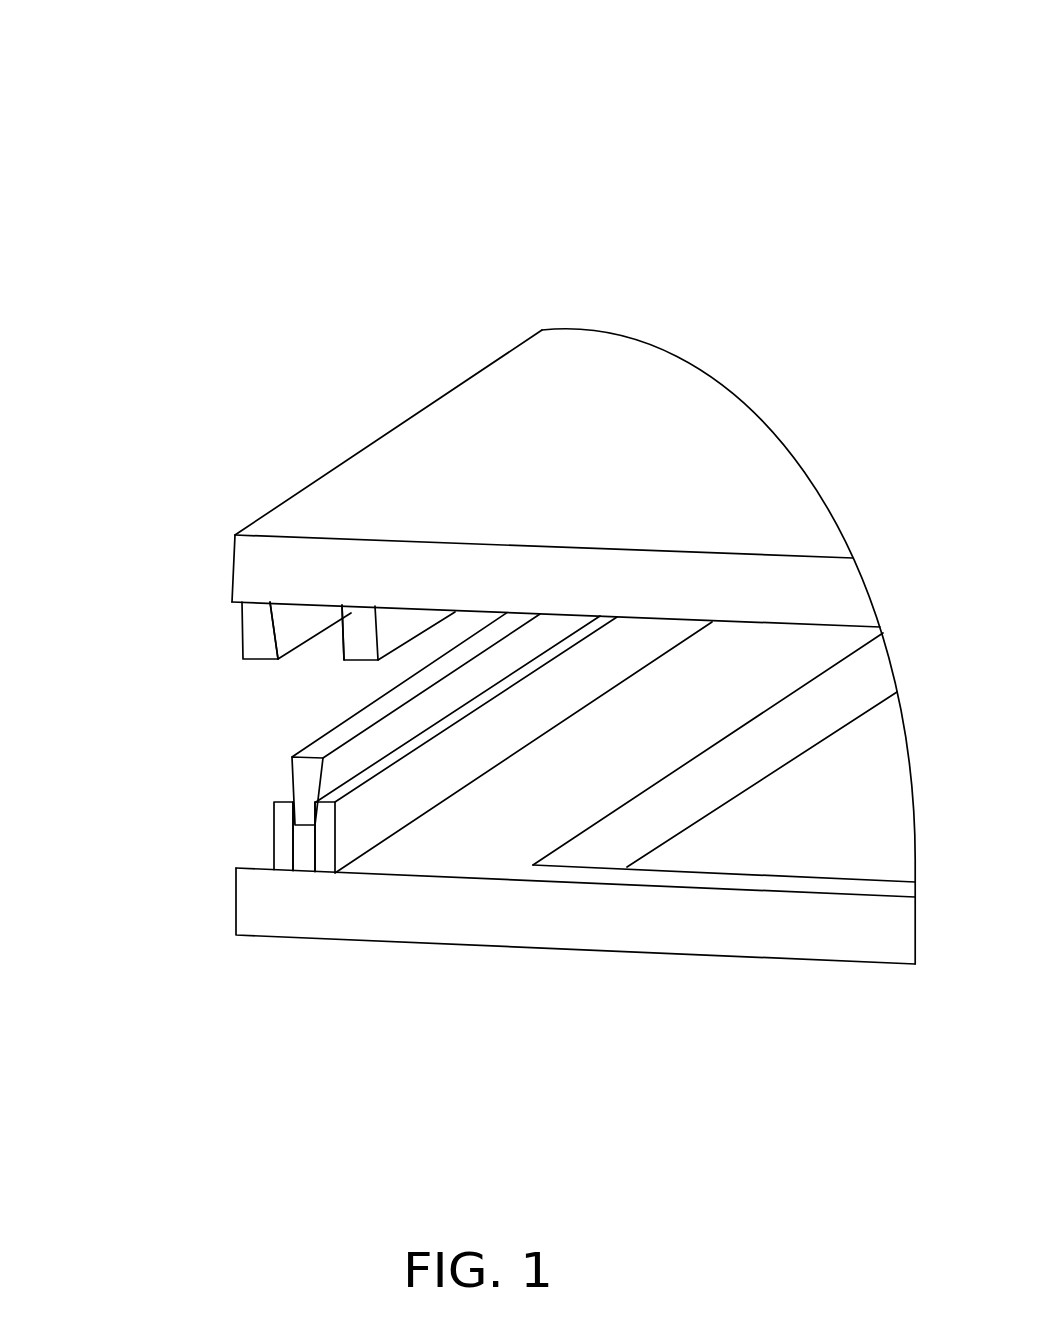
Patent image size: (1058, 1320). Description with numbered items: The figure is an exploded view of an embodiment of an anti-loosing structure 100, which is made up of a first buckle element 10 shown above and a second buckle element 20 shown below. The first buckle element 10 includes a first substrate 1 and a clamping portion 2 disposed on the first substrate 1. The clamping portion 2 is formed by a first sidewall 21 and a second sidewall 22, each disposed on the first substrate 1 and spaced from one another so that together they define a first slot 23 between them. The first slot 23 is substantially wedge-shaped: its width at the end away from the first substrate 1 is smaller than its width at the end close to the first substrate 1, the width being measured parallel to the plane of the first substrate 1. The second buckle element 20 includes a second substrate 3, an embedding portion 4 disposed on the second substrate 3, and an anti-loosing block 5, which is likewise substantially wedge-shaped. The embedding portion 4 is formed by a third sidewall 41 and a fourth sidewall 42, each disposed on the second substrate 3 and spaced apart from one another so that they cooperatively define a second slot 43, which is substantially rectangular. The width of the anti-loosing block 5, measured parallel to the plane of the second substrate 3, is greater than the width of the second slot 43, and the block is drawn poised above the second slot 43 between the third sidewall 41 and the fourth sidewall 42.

The anti-loosing structure 100 is at (517, 34).
The first buckle element 10 is at (84, 447).
The first substrate 1 is at (298, 512).
The clamping portion 2 is at (120, 508).
The first sidewall 21 is at (262, 620).
The second sidewall 22 is at (350, 612).
The first slot 23 is at (290, 632).
The anti-loosing block 5 is at (300, 772).
The second buckle element 20 is at (95, 832).
The second substrate 3 is at (258, 920).
The embedding portion 4 is at (148, 783).
The third sidewall 41 is at (282, 820).
The fourth sidewall 42 is at (324, 850).
The second slot 43 is at (290, 844).